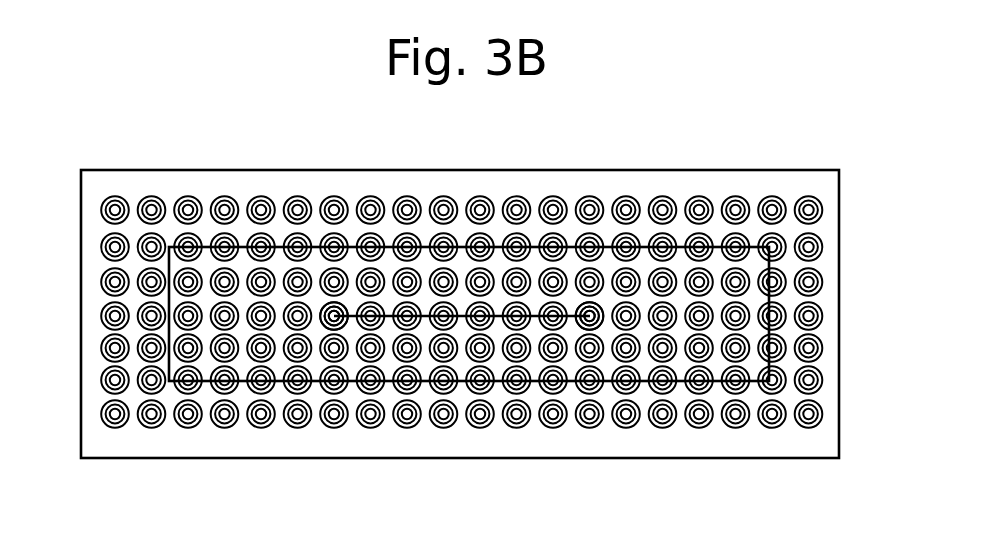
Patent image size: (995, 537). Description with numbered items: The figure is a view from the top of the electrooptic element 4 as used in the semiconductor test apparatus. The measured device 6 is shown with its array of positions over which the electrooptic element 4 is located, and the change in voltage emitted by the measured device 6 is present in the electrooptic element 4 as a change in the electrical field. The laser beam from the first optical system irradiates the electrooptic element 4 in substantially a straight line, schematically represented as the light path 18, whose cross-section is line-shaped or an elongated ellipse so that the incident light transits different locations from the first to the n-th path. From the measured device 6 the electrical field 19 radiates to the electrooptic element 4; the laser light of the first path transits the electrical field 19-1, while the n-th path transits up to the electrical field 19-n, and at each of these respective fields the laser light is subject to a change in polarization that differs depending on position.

The measured device 6 is at (310, 169).
The electrooptic element 4 is at (752, 370).
The light path 18 is at (499, 318).
The electrical field 19 is at (120, 422).
The electrical field 19-1 is at (332, 331).
The electrical field 19-n is at (600, 305).